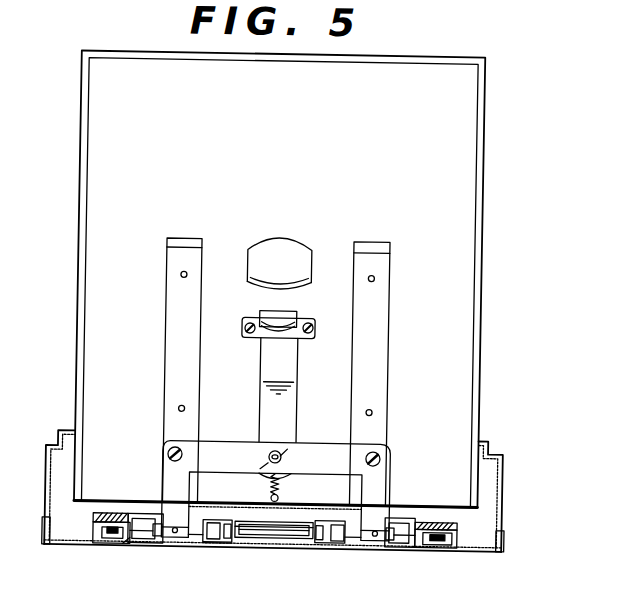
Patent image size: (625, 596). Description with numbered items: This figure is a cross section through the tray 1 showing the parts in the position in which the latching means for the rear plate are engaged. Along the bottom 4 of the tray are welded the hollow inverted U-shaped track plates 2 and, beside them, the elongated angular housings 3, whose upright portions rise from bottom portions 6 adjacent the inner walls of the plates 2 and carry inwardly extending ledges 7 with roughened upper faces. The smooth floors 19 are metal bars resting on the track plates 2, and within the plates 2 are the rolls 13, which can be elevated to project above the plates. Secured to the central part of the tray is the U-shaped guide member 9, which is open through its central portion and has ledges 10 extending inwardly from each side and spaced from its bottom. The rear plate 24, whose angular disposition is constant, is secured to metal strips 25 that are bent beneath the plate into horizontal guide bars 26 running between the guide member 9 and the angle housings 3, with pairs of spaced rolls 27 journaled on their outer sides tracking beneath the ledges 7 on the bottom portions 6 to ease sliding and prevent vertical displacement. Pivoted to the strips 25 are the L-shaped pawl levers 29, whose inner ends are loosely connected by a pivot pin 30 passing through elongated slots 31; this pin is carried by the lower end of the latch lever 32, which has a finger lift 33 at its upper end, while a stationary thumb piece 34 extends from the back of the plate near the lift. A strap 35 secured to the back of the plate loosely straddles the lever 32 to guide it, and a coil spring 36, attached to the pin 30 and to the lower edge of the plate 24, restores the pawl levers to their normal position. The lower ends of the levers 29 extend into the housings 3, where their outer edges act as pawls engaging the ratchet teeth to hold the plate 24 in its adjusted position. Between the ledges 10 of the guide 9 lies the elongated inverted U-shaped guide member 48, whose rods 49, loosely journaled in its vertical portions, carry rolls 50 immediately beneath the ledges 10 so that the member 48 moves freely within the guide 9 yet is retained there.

The tray 1 is at (58, 464).
The track plates 2 is at (99, 528).
The angular housings 3 is at (138, 548).
The bottom 4 is at (52, 549).
The bottom portions 6 is at (129, 548).
The ledges 7 is at (148, 516).
The guide member 9 is at (218, 552).
The ledges 10 is at (204, 542).
The rolls 13 is at (111, 546).
The smooth floors 19 is at (116, 517).
The rear plate 24 is at (279, 279).
The metal strips 25 is at (172, 360).
The horizontal guide bars 26 is at (182, 547).
The rolls 27 is at (152, 548).
The pawl levers 29 is at (275, 490).
The pivot pin 30 is at (273, 452).
The elongated slots 31 is at (287, 457).
The latch lever 32 is at (288, 388).
The finger lift 33 is at (265, 312).
The thumb piece 34 is at (278, 284).
The strap 35 is at (263, 338).
The coil spring 36 is at (286, 484).
The guide member 48 is at (294, 527).
The rods 49 is at (271, 543).
The rolls 50 is at (218, 548).